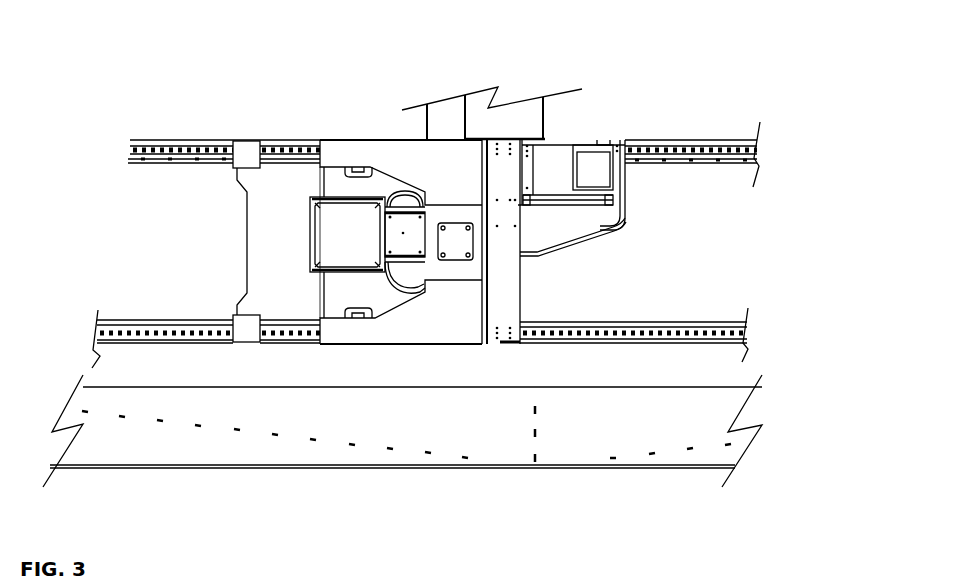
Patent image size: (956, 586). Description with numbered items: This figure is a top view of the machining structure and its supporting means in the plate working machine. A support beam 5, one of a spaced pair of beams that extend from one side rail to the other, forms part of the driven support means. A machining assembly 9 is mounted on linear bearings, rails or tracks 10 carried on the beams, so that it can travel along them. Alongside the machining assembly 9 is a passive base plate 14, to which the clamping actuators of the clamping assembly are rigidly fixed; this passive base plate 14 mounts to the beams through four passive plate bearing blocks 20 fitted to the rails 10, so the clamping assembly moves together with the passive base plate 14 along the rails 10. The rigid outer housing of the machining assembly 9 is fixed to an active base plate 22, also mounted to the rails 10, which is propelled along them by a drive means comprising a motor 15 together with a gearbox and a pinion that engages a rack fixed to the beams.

The support beam 5 is at (335, 432).
The machining assembly 9 is at (427, 322).
The rails 10 is at (662, 147).
The passive base plate 14 is at (265, 262).
The motor 15 is at (595, 172).
The passive plate bearing blocks 20 is at (240, 140).
The active base plate 22 is at (275, 198).